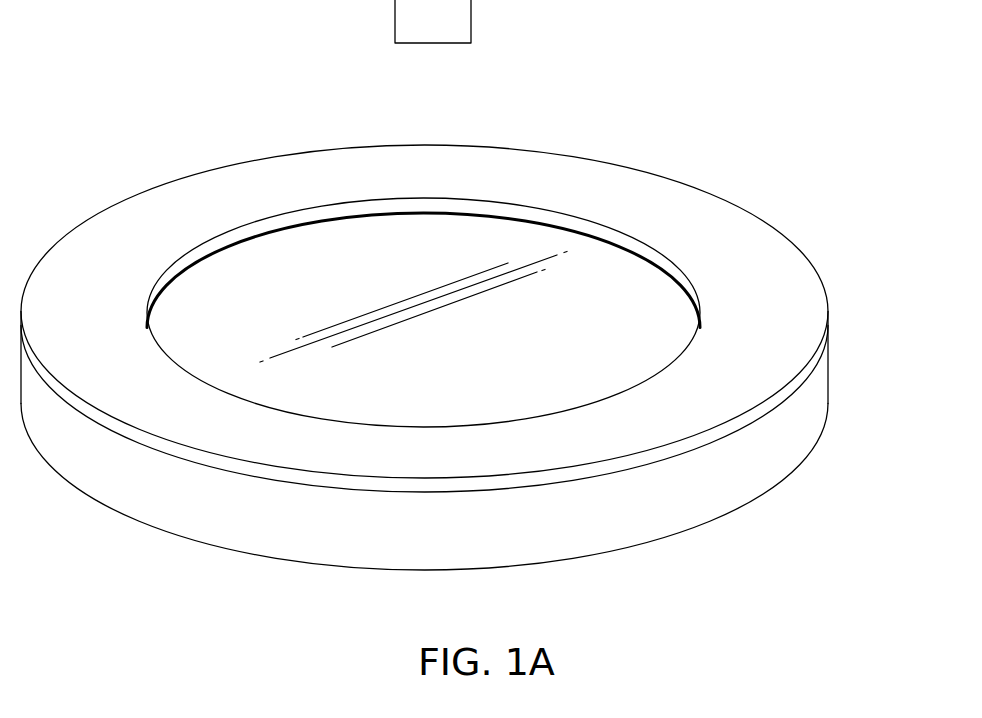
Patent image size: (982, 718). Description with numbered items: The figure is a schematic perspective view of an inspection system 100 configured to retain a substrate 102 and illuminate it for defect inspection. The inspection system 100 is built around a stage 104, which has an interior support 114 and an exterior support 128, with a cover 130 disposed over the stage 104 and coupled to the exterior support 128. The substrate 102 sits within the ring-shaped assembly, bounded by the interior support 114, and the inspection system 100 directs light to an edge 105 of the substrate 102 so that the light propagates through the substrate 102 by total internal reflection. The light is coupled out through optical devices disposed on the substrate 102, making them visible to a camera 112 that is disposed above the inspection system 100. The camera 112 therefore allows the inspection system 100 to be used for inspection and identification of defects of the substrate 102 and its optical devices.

The inspection system 100 is at (690, 90).
The substrate 102 is at (612, 270).
The stage 104 is at (463, 441).
The edge 105 is at (687, 277).
The camera 112 is at (413, 28).
The interior support 114 is at (462, 220).
The exterior support 128 is at (765, 493).
The cover 130 is at (828, 323).